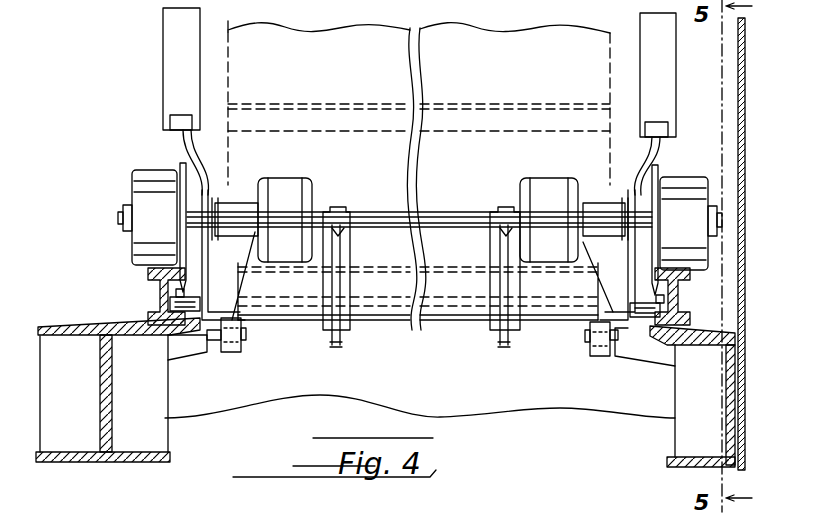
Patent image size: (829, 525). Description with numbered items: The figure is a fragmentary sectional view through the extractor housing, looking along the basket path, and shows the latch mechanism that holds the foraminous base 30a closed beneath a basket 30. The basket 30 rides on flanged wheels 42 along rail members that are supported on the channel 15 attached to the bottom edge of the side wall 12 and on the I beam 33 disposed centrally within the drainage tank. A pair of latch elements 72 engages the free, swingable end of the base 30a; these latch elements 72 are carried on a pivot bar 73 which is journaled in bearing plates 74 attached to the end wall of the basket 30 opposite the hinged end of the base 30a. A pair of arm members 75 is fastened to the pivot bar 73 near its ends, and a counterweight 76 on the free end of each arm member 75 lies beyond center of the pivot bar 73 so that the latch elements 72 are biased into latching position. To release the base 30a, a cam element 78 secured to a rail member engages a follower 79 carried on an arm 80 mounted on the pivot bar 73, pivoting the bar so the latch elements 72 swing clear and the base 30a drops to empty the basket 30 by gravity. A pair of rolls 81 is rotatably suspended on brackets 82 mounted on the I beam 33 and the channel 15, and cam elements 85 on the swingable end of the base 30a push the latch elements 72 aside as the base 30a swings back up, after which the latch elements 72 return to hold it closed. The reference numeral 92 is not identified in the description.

The side wall 12 is at (737, 108).
The channel 15 is at (692, 396).
The basket 30 is at (419, 175).
The base 30a is at (436, 320).
The I beam 33 is at (118, 390).
The flanged wheel 42 is at (420, 229).
The latch element 72 is at (341, 345).
The pivot bar 73 is at (378, 218).
The bearing plate 74 is at (290, 190).
The arm member 75 is at (188, 141).
The counterweight 76 is at (690, 80).
The cam element 78 is at (180, 297).
The follower 79 is at (168, 319).
The arm 80 is at (425, 255).
The roll 81 is at (232, 352).
The bracket 82 is at (197, 358).
The cam element 85 is at (348, 260).
The rail 92 is at (142, 292).